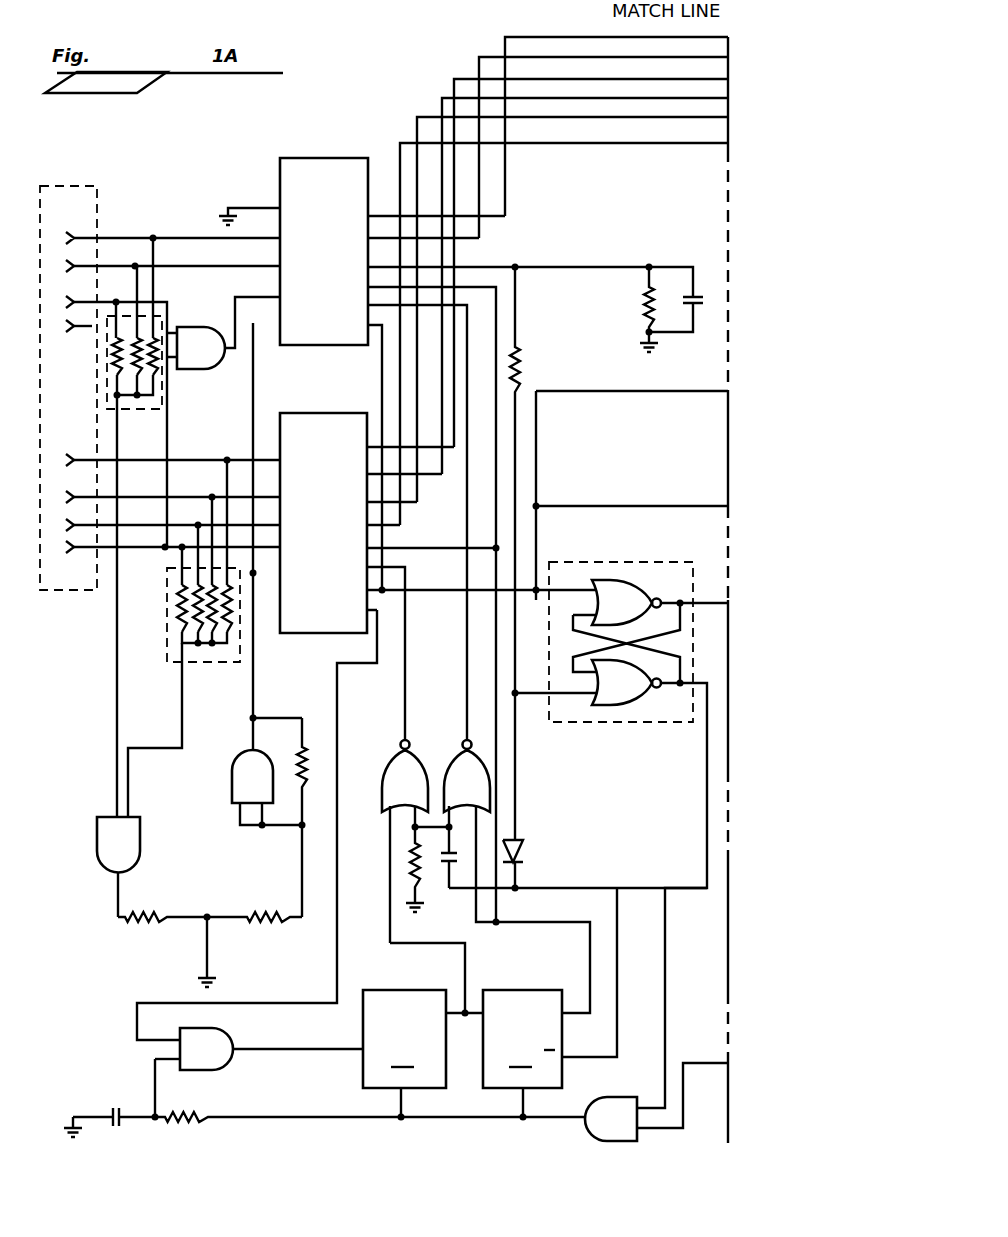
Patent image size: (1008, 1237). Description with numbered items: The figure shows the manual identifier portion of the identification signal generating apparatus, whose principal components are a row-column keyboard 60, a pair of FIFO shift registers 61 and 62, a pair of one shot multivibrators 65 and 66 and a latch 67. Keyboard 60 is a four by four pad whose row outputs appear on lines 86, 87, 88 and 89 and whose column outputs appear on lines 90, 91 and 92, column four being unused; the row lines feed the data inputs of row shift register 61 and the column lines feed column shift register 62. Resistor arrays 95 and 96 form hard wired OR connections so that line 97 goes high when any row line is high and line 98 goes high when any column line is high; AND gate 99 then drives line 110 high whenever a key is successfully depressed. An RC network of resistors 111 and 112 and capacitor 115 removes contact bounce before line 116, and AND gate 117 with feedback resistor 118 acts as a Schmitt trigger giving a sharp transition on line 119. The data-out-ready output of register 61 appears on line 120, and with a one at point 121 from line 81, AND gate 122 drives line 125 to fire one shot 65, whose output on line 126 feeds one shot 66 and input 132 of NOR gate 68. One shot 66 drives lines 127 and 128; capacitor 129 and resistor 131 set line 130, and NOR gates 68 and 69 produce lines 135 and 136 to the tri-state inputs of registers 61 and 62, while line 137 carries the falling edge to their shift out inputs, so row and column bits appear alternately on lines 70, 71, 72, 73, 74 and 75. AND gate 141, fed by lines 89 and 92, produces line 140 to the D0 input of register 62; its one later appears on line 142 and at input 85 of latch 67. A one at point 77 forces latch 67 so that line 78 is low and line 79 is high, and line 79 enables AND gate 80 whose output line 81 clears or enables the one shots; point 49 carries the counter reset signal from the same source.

The point 49 is at (538, 504).
The row-column keyboard 60 is at (70, 186).
The FIFO shift register 61 is at (304, 413).
The FIFO shift register 62 is at (330, 158).
The one shot multivibrator 65 is at (398, 990).
The one shot multivibrator 66 is at (547, 990).
The latch 67 is at (624, 562).
The NOR gate 68 is at (410, 740).
The NOR gate 69 is at (448, 752).
The line 70 is at (400, 162).
The line 71 is at (417, 126).
The line 72 is at (441, 108).
The line 73 is at (454, 88).
The line 74 is at (479, 68).
The line 75 is at (505, 44).
The point 77 is at (536, 602).
The line 78 is at (708, 600).
The line 79 is at (706, 746).
The AND gate 80 is at (622, 1098).
The line 81 is at (562, 1117).
The input 85 is at (533, 696).
The line 86 is at (182, 460).
The line 87 is at (178, 497).
The line 88 is at (130, 527).
The line 89 is at (148, 549).
The line 90 is at (170, 238).
The line 91 is at (176, 266).
The line 92 is at (167, 312).
The resistor array 95 is at (167, 652).
The resistor array 96 is at (138, 410).
The line 97 is at (182, 720).
The line 98 is at (116, 670).
The AND gate 99 is at (140, 840).
The line 110 is at (118, 896).
The resistor 111 is at (150, 920).
The resistor 112 is at (265, 922).
The capacitor 115 is at (211, 968).
The line 116 is at (302, 876).
The AND gate 117 is at (232, 768).
The resistor 118 is at (303, 748).
The line 119 is at (254, 684).
The line 120 is at (338, 712).
The point 121 is at (154, 1115).
The AND gate 122 is at (215, 1030).
The line 125 is at (288, 1050).
The line 126 is at (470, 1010).
The line 127 is at (545, 921).
The line 128 is at (560, 888).
The capacitor 129 is at (442, 868).
The line 130 is at (413, 830).
The resistor 131 is at (410, 868).
The input 132 is at (388, 822).
The line 135 is at (430, 630).
The line 136 is at (466, 494).
The line 137 is at (498, 413).
The line 140 is at (258, 297).
The AND gate 141 is at (205, 369).
The line 142 is at (572, 267).